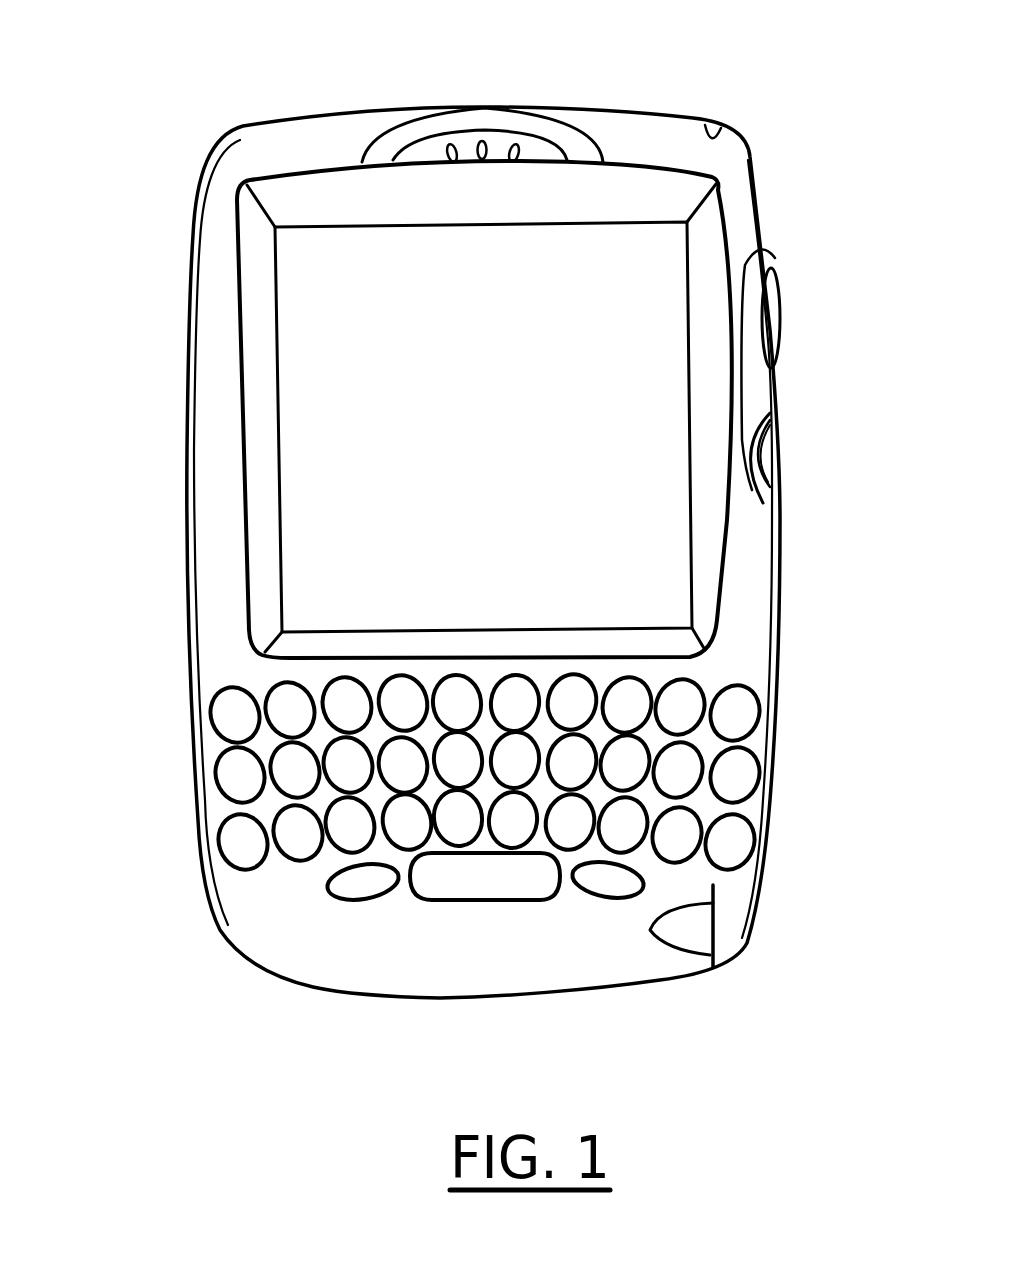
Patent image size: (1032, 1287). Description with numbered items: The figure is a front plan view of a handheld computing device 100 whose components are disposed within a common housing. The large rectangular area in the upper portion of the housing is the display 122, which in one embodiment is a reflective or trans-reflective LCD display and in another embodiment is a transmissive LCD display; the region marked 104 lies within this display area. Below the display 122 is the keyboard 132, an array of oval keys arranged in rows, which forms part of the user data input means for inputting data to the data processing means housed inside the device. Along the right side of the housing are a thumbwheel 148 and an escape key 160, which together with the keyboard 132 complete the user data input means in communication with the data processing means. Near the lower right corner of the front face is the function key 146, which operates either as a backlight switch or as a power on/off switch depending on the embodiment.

The handheld computing device 100 is at (147, 195).
The display 104 is at (515, 432).
The display 122 is at (692, 540).
The keyboard 132 is at (835, 672).
The function key 146 is at (710, 950).
The thumbwheel 148 is at (778, 327).
The escape key 160 is at (767, 450).